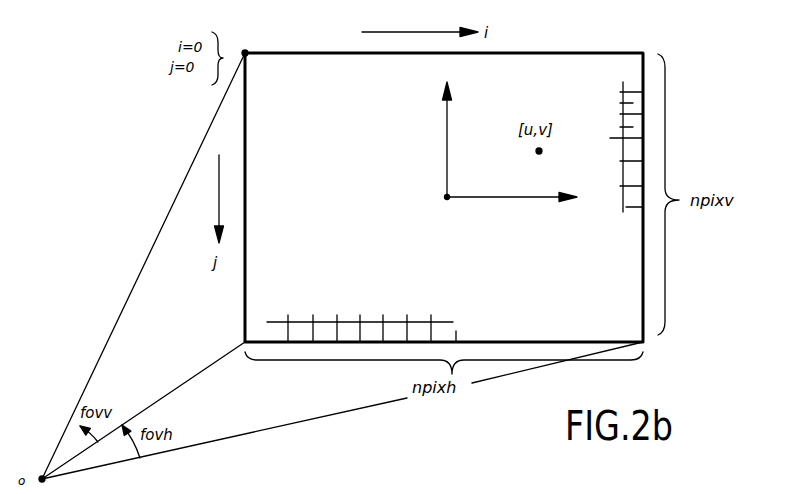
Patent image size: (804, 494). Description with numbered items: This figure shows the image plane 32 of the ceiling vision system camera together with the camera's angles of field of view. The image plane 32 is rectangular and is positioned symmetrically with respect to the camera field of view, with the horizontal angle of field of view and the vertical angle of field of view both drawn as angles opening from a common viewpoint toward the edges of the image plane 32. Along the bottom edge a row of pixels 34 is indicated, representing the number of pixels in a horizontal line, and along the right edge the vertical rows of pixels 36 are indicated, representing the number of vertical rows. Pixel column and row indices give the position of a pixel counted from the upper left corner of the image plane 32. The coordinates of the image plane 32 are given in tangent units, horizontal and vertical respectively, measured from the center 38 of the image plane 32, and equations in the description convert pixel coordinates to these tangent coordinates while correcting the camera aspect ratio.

The image plane 32 is at (583, 53).
The pixels in a horizontal line 34 is at (300, 330).
The vertical rows of pixels 36 is at (623, 125).
The center of the image plane 38 is at (440, 199).